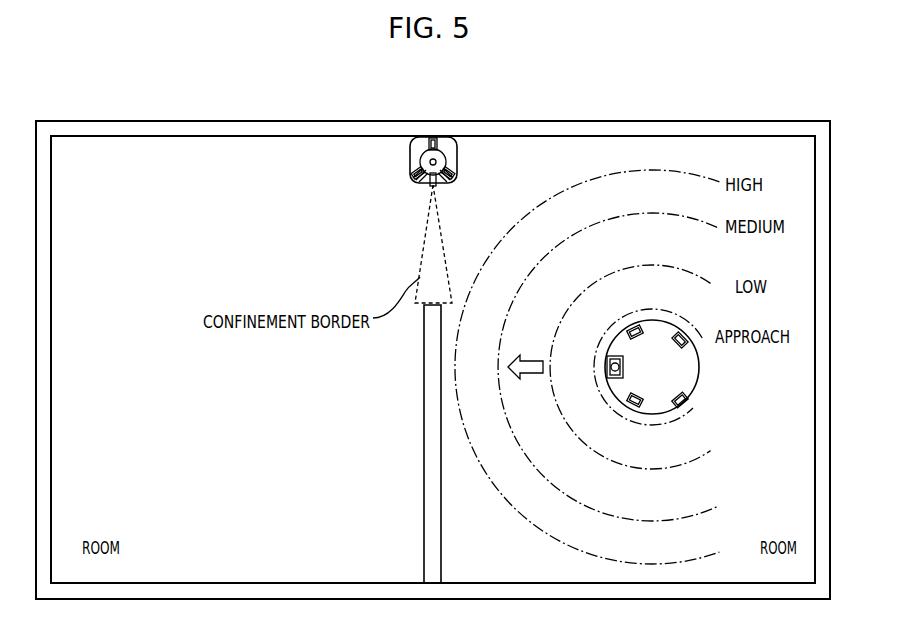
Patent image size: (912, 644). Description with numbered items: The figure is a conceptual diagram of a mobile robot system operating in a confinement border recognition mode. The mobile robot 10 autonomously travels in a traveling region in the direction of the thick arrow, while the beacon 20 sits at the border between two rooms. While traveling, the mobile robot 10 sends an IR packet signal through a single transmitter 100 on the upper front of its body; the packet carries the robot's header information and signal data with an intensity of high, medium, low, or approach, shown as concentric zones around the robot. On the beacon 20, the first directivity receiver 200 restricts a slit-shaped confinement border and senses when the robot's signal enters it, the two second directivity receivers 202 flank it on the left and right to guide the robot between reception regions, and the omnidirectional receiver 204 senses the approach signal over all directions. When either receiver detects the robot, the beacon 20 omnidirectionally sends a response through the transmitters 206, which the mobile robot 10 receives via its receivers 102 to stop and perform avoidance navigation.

The mobile robot 10 is at (700, 373).
The transmitter 100 is at (608, 367).
The receivers 102 is at (632, 334).
The beacon 20 is at (412, 140).
The first directivity receiver 200 is at (430, 190).
The second directivity receivers 202 is at (415, 183).
The omnidirectional receiver 204 is at (445, 158).
The transmitters 206 is at (431, 137).